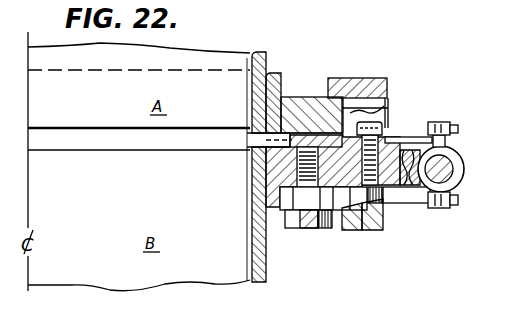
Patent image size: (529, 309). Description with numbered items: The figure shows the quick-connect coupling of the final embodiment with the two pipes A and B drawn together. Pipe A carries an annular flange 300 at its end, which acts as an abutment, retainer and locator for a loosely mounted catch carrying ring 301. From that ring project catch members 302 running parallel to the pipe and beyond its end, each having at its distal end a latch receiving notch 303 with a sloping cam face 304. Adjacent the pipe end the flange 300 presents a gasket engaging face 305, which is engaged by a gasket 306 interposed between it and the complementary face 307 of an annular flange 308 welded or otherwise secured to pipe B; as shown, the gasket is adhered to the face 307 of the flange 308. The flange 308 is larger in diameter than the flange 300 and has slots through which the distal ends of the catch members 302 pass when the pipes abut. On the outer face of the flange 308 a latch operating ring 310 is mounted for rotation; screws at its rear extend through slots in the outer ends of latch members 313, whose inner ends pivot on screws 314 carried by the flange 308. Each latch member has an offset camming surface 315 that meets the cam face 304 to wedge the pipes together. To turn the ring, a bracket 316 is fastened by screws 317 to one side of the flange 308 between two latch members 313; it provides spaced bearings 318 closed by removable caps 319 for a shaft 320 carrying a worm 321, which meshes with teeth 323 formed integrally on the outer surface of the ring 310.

The annular flange 300 is at (318, 98).
The catch carrying ring 301 is at (372, 78).
The catch members 302 is at (388, 97).
The latch receiving notch 303 is at (384, 219).
The sloping cam face 304 is at (352, 231).
The gasket engaging face 305 is at (276, 137).
The gasket 306 is at (264, 144).
The complementary face 307 is at (252, 165).
The annular flange 308 is at (327, 210).
The latch operating ring 310 is at (384, 134).
The latch members 313 is at (302, 202).
The screws 314 is at (300, 200).
The offset camming surface 315 is at (359, 226).
The bracket 316 is at (343, 135).
The screws 317 is at (387, 123).
The bearings 318 is at (434, 211).
The caps 319 is at (447, 212).
The shaft 320 is at (462, 168).
The worm 321 is at (458, 150).
The teeth 323 is at (406, 177).